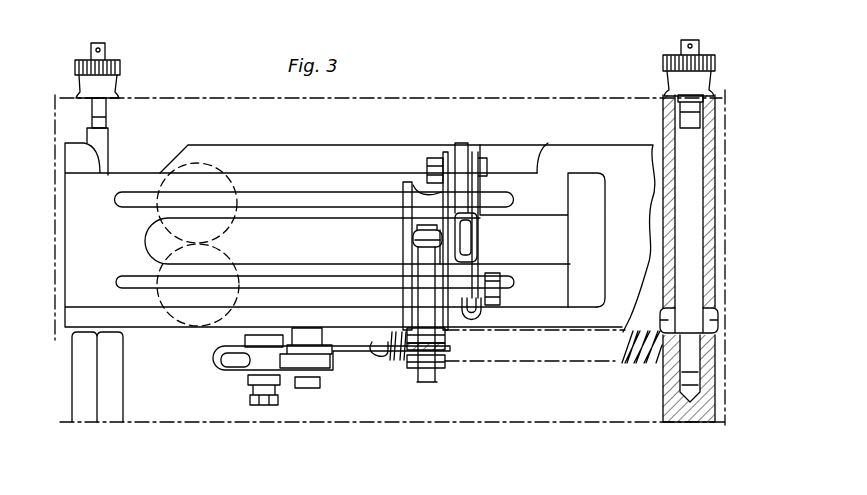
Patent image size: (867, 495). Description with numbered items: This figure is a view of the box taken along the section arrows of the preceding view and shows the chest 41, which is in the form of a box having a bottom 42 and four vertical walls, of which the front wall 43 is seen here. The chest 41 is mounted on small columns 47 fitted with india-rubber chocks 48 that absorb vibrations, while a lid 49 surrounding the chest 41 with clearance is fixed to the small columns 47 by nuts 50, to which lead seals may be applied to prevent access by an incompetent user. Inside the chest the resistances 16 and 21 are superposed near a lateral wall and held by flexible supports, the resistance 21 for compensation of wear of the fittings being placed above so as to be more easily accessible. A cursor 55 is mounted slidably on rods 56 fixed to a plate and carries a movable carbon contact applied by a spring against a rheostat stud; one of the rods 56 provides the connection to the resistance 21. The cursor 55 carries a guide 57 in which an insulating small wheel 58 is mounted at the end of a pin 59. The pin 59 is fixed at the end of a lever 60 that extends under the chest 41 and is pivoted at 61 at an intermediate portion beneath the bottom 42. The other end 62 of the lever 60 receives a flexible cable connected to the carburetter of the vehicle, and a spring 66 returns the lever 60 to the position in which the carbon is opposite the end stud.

The resistance 16 is at (165, 291).
The resistance 21 is at (168, 184).
The chest 41 is at (215, 134).
The bottom 42 is at (152, 328).
The front wall 43 is at (563, 153).
The small columns 47 is at (108, 119).
The india-rubber chocks 48 is at (118, 337).
The lid 49 is at (486, 97).
The nuts 50 is at (117, 68).
The cursor 55 is at (399, 245).
The rods 56 is at (336, 200).
The guide 57 is at (428, 187).
The insulating small wheel 58 is at (420, 241).
The pin 59 is at (430, 300).
The lever 60 is at (352, 349).
The pivot 61 is at (307, 328).
The other end of the lever 62 is at (250, 378).
The spring 66 is at (628, 358).